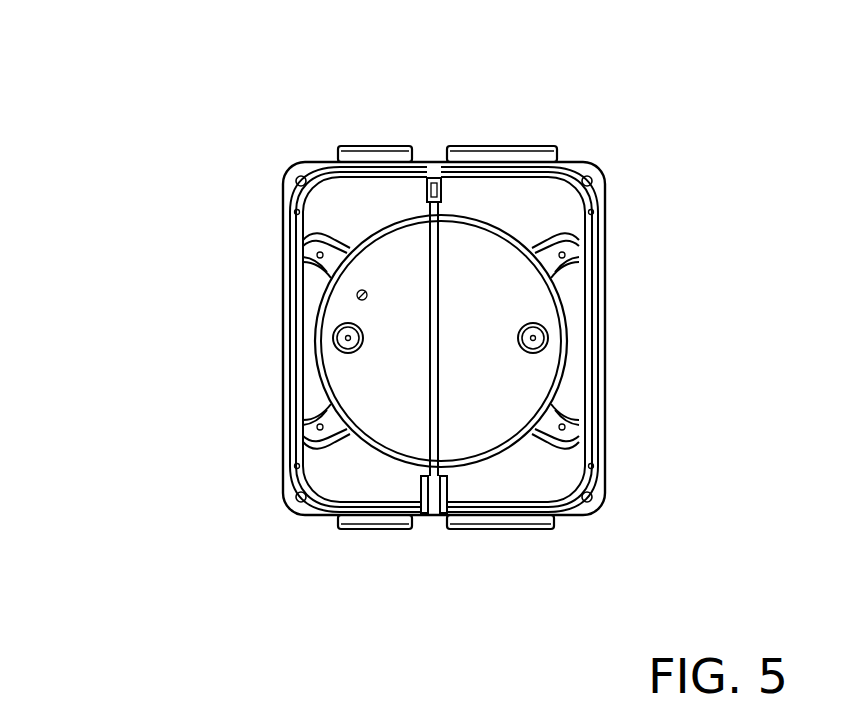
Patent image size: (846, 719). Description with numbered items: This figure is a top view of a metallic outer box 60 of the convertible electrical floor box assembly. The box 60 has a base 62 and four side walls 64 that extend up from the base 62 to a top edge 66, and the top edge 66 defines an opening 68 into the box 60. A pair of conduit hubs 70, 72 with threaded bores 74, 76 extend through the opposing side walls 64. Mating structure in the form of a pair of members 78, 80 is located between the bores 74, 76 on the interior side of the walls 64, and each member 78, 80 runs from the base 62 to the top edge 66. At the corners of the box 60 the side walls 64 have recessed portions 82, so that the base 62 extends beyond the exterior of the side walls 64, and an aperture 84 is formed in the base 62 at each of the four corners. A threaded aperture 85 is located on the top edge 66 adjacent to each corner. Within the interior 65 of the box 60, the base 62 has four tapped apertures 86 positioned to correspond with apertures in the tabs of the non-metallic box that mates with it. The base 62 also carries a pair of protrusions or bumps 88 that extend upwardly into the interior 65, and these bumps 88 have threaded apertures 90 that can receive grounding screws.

The metallic outer box 60 is at (182, 153).
The base 62 is at (342, 458).
The side walls 64 is at (607, 262).
The interior 65 is at (494, 402).
The top edge 66 is at (283, 300).
The opening 68 is at (513, 475).
The conduit hub 70 is at (337, 148).
The conduit hub 72 is at (473, 147).
The threaded bore 74 is at (385, 146).
The threaded bore 76 is at (510, 145).
The member 78 is at (433, 530).
The member 80 is at (434, 178).
The recessed portions 82 is at (287, 168).
The aperture 84 is at (283, 174).
The threaded aperture 85 is at (318, 226).
The tapped apertures 86 is at (305, 240).
The protrusions or bumps 88 is at (335, 332).
The threaded apertures 90 is at (356, 338).